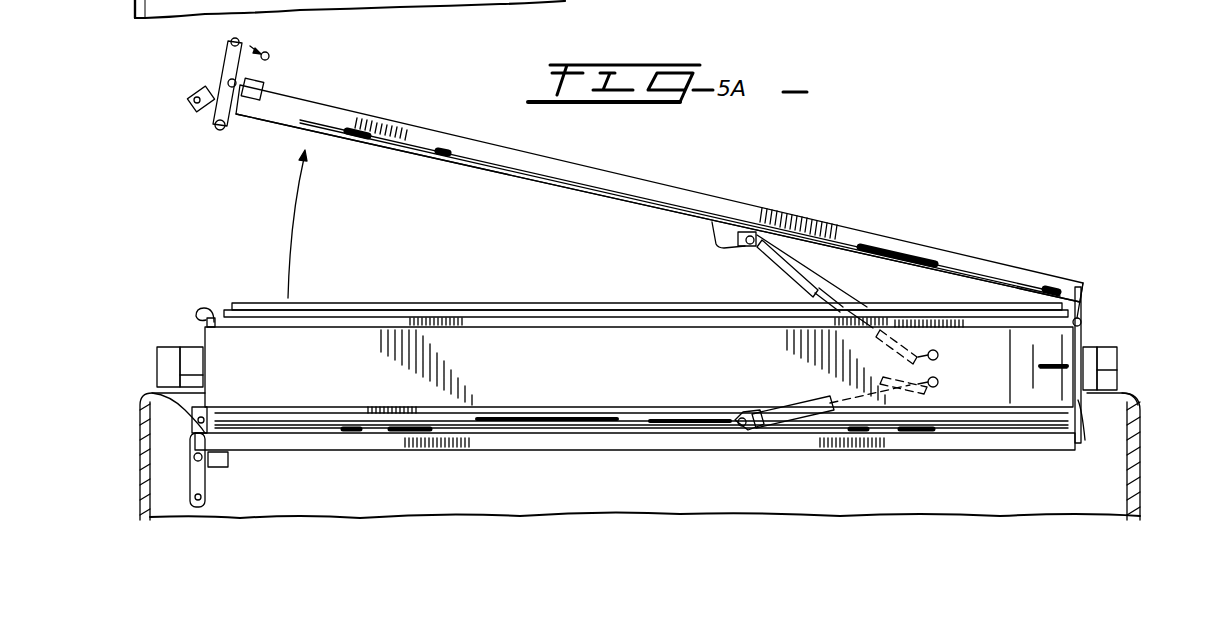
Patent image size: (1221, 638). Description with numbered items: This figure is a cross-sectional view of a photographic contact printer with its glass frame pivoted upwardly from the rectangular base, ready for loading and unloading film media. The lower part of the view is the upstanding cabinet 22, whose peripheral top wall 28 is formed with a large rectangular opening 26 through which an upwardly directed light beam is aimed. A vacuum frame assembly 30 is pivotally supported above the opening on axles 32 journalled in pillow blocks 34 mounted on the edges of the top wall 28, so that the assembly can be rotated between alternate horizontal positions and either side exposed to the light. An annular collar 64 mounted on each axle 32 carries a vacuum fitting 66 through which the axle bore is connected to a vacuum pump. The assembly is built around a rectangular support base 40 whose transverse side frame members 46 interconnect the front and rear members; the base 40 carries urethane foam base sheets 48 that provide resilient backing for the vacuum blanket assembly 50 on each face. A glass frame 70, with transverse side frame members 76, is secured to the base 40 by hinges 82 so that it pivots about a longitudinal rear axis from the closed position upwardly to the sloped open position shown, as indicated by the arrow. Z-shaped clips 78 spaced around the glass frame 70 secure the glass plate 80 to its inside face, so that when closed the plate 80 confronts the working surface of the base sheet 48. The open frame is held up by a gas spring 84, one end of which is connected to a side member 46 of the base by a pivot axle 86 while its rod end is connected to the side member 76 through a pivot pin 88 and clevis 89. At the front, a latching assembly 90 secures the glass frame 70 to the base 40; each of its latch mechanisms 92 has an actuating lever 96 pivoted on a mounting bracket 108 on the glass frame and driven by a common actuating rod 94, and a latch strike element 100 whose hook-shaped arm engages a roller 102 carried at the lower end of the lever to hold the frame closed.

The cabinet 22 is at (1141, 428).
The opening 26 is at (145, 412).
The top wall 28 is at (1130, 392).
The vacuum frame assembly 30 is at (1100, 320).
The axle 32 is at (1117, 370).
The pillow block 34 is at (1115, 350).
The support base 40 is at (645, 318).
The side frame member 46 is at (656, 378).
The base sheet 48 is at (405, 312).
The vacuum blanket assembly 50 is at (560, 303).
The annular collar 64 is at (1092, 347).
The vacuum fitting 66 is at (147, 440).
The glass frame 70 is at (822, 218).
The side frame member 76 is at (940, 257).
The clip 78 is at (243, 115).
The glass plate 80 is at (553, 188).
The hinge 82 is at (1080, 300).
The gas spring 84 is at (762, 262).
The pivot axle 86 is at (940, 382).
The pivot pin 88 is at (717, 232).
The clevis 89 is at (755, 238).
The latching assembly 90 is at (186, 78).
The latch mechanism 92 is at (266, 60).
The actuating rod 94 is at (238, 40).
The actuating lever 96 is at (228, 60).
The latch strike element 100 is at (218, 310).
The roller 102 is at (214, 125).
The mounting bracket 108 is at (262, 88).